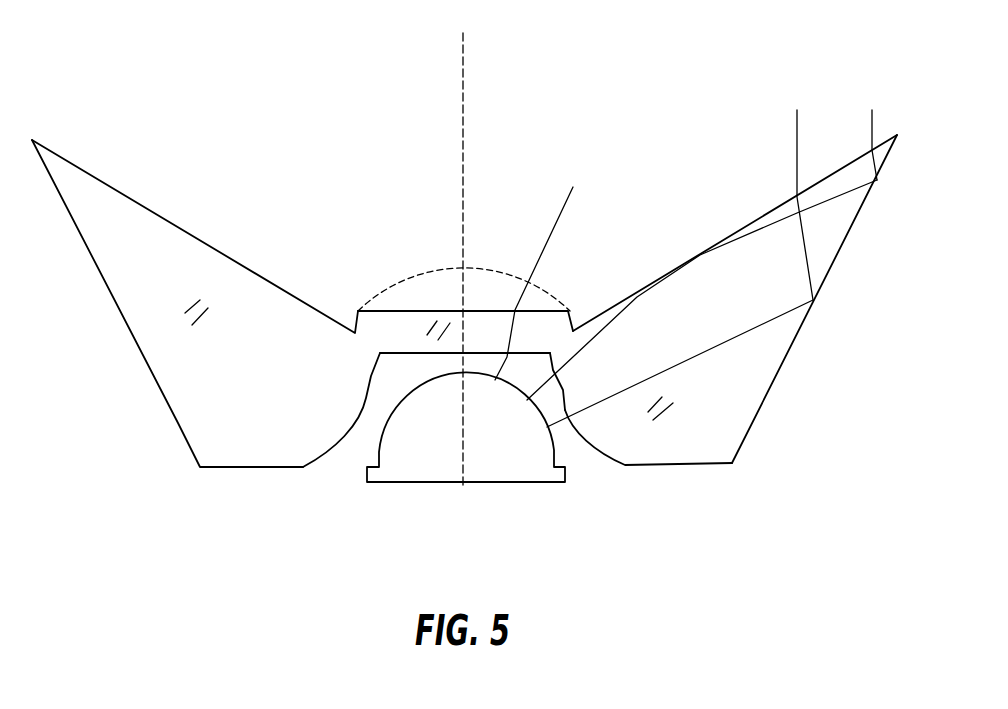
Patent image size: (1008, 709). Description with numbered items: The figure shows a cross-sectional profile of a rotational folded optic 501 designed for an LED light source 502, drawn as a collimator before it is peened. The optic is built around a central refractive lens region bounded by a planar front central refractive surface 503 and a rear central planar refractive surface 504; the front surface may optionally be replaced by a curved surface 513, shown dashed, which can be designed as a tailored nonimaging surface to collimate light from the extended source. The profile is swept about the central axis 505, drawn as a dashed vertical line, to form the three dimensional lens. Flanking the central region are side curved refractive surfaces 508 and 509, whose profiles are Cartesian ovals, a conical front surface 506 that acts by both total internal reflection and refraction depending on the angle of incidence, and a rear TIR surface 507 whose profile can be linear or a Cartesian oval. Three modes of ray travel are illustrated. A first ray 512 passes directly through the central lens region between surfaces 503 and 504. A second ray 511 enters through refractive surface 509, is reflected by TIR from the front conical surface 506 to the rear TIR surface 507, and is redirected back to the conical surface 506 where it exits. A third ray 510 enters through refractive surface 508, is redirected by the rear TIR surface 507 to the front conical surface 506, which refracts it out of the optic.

The rotational folded optic 501 is at (175, 164).
The LED light source 502 is at (515, 488).
The planar front central refractive surface 503 is at (393, 307).
The rear central planar refractive surface 504 is at (405, 346).
The optical axis 505 is at (458, 202).
The conical front surface 506 is at (650, 283).
The rear TIR surface 507 is at (832, 272).
The side curved refractive surface 508 is at (592, 437).
The side curved refractive surface 509 is at (563, 377).
The ray 510 is at (737, 340).
The ray 511 is at (767, 231).
The ray 512 is at (553, 219).
The curved surface 513 is at (436, 266).